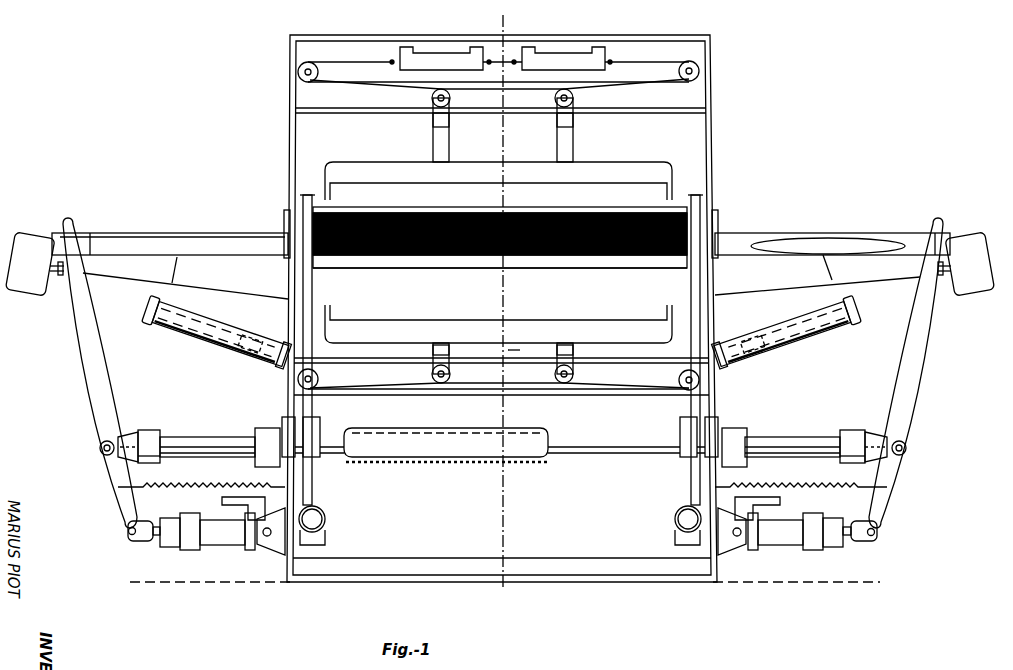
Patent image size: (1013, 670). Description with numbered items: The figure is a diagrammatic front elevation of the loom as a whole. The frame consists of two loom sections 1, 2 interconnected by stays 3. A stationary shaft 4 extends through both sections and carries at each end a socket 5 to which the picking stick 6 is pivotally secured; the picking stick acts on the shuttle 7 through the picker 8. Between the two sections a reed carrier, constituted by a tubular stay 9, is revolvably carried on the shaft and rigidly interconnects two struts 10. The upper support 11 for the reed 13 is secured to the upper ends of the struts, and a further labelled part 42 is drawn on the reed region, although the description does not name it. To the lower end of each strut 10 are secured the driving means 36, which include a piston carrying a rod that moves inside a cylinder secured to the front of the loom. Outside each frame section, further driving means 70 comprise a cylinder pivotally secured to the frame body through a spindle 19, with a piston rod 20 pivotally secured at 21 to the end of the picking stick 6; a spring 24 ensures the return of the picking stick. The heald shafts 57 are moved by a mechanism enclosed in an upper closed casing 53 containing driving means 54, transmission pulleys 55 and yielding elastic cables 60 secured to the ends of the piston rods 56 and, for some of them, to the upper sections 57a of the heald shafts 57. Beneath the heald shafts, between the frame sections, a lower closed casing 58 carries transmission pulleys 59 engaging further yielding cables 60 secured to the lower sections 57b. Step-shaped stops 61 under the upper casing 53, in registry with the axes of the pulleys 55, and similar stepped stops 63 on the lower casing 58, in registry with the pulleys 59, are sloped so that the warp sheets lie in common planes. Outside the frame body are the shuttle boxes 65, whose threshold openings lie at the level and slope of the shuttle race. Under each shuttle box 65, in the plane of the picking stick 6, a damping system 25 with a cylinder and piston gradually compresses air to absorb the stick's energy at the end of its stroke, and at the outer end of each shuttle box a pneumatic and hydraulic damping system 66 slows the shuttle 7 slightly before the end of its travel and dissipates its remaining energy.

The loom section 1 is at (281, 212).
The loom section 2 is at (719, 212).
The stays 3 is at (459, 565).
The stationary shaft 4 is at (215, 425).
The socket 5 is at (151, 448).
The picking stick 6 is at (103, 421).
The shuttle 7 is at (820, 245).
The picker 8 is at (87, 242).
The tubular stay 9 is at (593, 445).
The struts 10 is at (303, 197).
The upper support 11 is at (437, 210).
The reed 13 is at (364, 253).
The spindle 19 is at (254, 547).
The piston rod 20 is at (157, 542).
The pivot 21 is at (129, 534).
The spring 24 is at (238, 483).
The damping system 25 is at (162, 327).
The driving means 36 is at (325, 519).
The roller shaft 42 is at (519, 264).
The upper closed casing 53 is at (347, 37).
The driving means 54 is at (440, 58).
The transmission pulleys 55 is at (298, 71).
The piston rods 56 is at (392, 58).
The heald shafts 57 is at (320, 192).
The upper sections of the heald shafts 57a is at (545, 180).
The lower sections of the heald shafts 57b is at (422, 341).
The lower closed casing 58 is at (510, 348).
The transmission pulleys 59 is at (298, 380).
The yielding elastic cables 60 is at (338, 92).
The stops 61 is at (433, 120).
The stops 63 is at (446, 350).
The shuttle boxes 65 is at (250, 286).
The pneumatic and hydraulic damping system 66 is at (38, 271).
The further driving means 70 is at (214, 544).